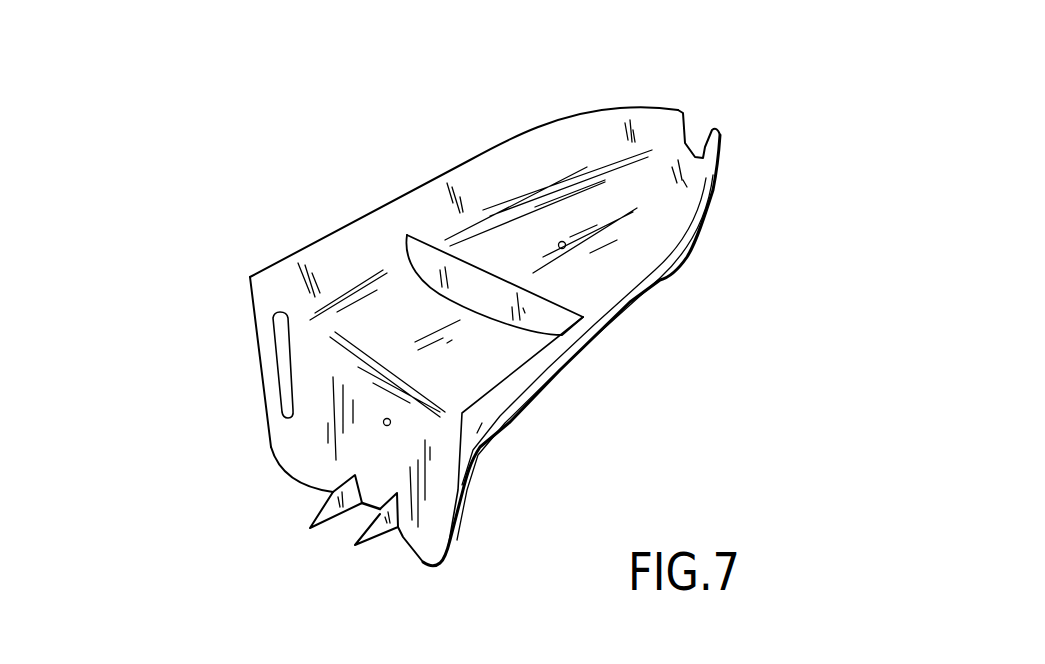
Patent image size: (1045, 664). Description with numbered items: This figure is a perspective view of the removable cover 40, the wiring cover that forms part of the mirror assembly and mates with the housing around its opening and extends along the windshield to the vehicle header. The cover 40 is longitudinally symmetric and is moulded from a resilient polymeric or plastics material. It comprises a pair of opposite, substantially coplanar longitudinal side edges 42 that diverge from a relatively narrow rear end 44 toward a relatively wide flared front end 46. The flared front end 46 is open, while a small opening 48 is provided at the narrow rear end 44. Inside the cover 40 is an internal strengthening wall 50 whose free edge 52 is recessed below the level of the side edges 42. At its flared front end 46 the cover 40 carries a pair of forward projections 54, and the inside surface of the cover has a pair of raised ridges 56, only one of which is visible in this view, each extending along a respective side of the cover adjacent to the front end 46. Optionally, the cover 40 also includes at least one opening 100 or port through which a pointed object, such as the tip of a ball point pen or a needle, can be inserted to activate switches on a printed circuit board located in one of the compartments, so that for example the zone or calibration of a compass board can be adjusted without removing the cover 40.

The removable cover 40 is at (618, 400).
The longitudinal side edges 42 is at (432, 180).
The narrow rear end 44 is at (643, 107).
The flared front end 46 is at (257, 385).
The small opening 48 is at (706, 112).
The internal strengthening wall 50 is at (475, 297).
The free edge 52 is at (477, 268).
The forward projections 54 is at (368, 552).
The raised ridges 56 is at (276, 340).
The opening 100 is at (565, 247).